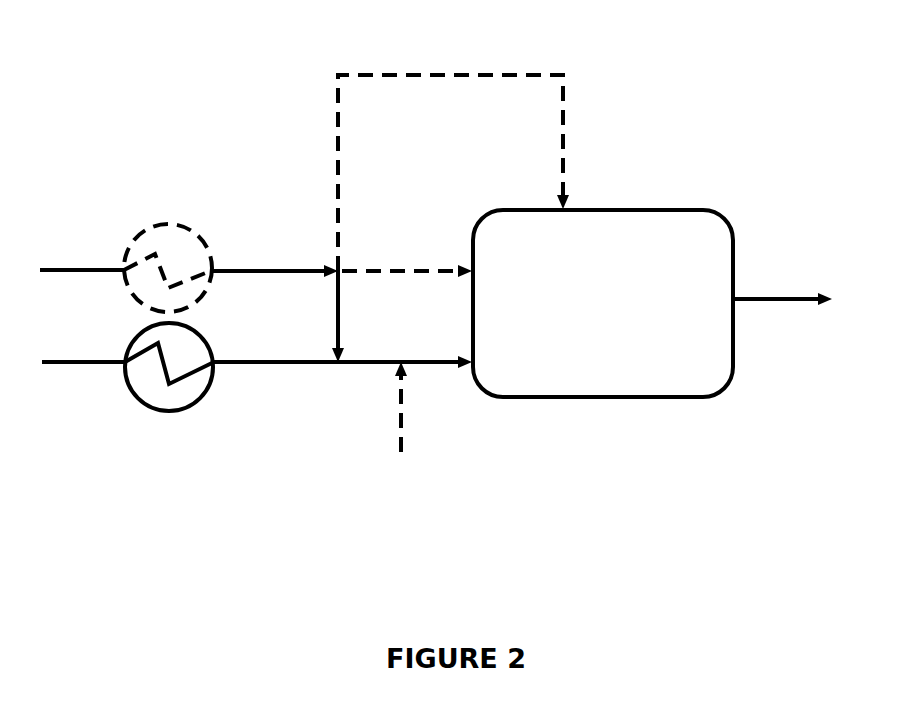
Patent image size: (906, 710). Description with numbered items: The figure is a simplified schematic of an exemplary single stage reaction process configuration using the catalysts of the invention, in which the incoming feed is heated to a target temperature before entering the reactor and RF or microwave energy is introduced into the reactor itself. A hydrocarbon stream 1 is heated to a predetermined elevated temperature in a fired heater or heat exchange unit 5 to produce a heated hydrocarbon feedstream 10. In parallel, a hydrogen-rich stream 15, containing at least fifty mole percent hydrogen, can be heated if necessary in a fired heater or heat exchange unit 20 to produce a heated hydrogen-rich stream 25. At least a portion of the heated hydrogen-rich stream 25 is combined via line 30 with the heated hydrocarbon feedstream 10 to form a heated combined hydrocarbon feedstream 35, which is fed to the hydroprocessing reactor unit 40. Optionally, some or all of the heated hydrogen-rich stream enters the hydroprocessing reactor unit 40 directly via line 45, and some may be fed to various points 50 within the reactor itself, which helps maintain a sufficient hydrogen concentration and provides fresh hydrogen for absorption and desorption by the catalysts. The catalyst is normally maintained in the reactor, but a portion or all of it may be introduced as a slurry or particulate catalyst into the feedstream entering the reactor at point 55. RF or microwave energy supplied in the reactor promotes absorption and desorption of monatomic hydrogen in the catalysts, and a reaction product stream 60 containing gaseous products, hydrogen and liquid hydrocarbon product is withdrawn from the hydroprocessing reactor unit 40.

The hydrocarbon stream 1 is at (83, 382).
The fired heater or heat exchange unit 5 is at (169, 389).
The heated hydrocarbon feedstream 10 is at (306, 381).
The hydrogen-rich stream 15 is at (82, 248).
The fired heater or heat exchange unit 20 is at (168, 246).
The heated hydrogen-rich stream 25 is at (275, 251).
The combining line 30 is at (353, 316).
The heated combined hydrocarbon feedstream 35 is at (436, 350).
The hydroprocessing reactor unit 40 is at (603, 303).
The line 45 is at (407, 255).
The points within the hydroprocessing reactor unit 50 is at (455, 144).
The catalyst entry point 55 is at (416, 407).
The reaction product stream 60 is at (782, 283).